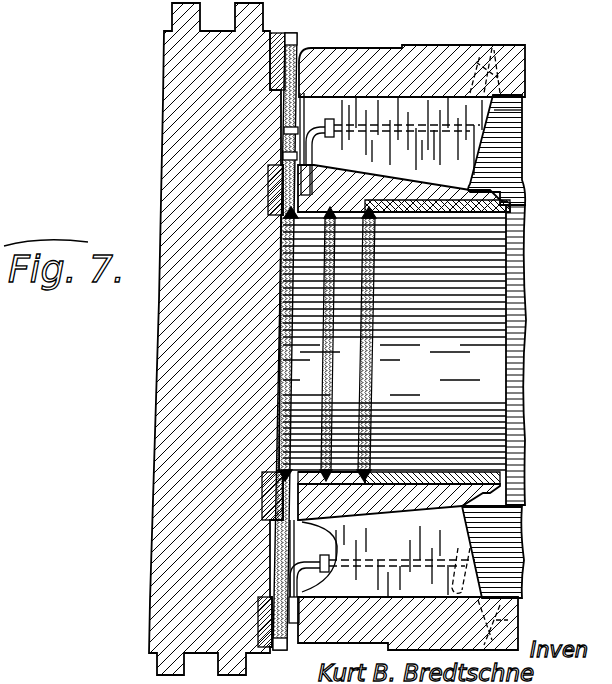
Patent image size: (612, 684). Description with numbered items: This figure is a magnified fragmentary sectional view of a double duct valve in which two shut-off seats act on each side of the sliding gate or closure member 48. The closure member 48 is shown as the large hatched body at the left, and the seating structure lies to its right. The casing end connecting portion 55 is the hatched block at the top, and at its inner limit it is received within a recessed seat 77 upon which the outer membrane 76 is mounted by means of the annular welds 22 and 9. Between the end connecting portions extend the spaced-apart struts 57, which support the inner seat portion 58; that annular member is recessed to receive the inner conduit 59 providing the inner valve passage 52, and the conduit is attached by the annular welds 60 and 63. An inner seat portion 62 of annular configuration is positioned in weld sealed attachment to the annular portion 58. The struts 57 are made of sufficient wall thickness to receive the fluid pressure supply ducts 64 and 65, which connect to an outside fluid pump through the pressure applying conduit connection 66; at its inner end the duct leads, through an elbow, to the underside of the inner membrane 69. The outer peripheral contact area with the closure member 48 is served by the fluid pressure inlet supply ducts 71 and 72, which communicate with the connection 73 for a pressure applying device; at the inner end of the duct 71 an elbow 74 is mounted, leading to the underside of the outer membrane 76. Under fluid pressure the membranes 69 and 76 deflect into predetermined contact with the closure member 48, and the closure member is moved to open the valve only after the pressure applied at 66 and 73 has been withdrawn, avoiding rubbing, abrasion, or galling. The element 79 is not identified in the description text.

The closure member 48 is at (157, 68).
The outer membrane 76 is at (290, 46).
The recessed seats 77 is at (331, 47).
The annular weld 22 is at (299, 47).
The double seating portions 55 is at (431, 46).
The pressure applying conduit connection 66 is at (491, 48).
The annular weld 9 is at (323, 98).
The fluid pressure supply duct 64 is at (415, 125).
The struts 57 is at (493, 346).
The fluid pressure supply duct 65 is at (519, 108).
The inner valve passage 52 is at (480, 297).
The annular weld 63 is at (334, 343).
The inner seat portions 58 is at (474, 193).
The inner conduits 59 is at (497, 205).
The elbow 74 is at (284, 131).
The inner membrane 69 is at (283, 156).
The inner seat portion 62 is at (333, 232).
The annular weld 60 is at (371, 283).
The boss 79 is at (328, 572).
The fluid pressure inlet supply duct 71 is at (392, 559).
The fluid pressure inlet supply duct 72 is at (468, 573).
The connection 73 is at (503, 633).